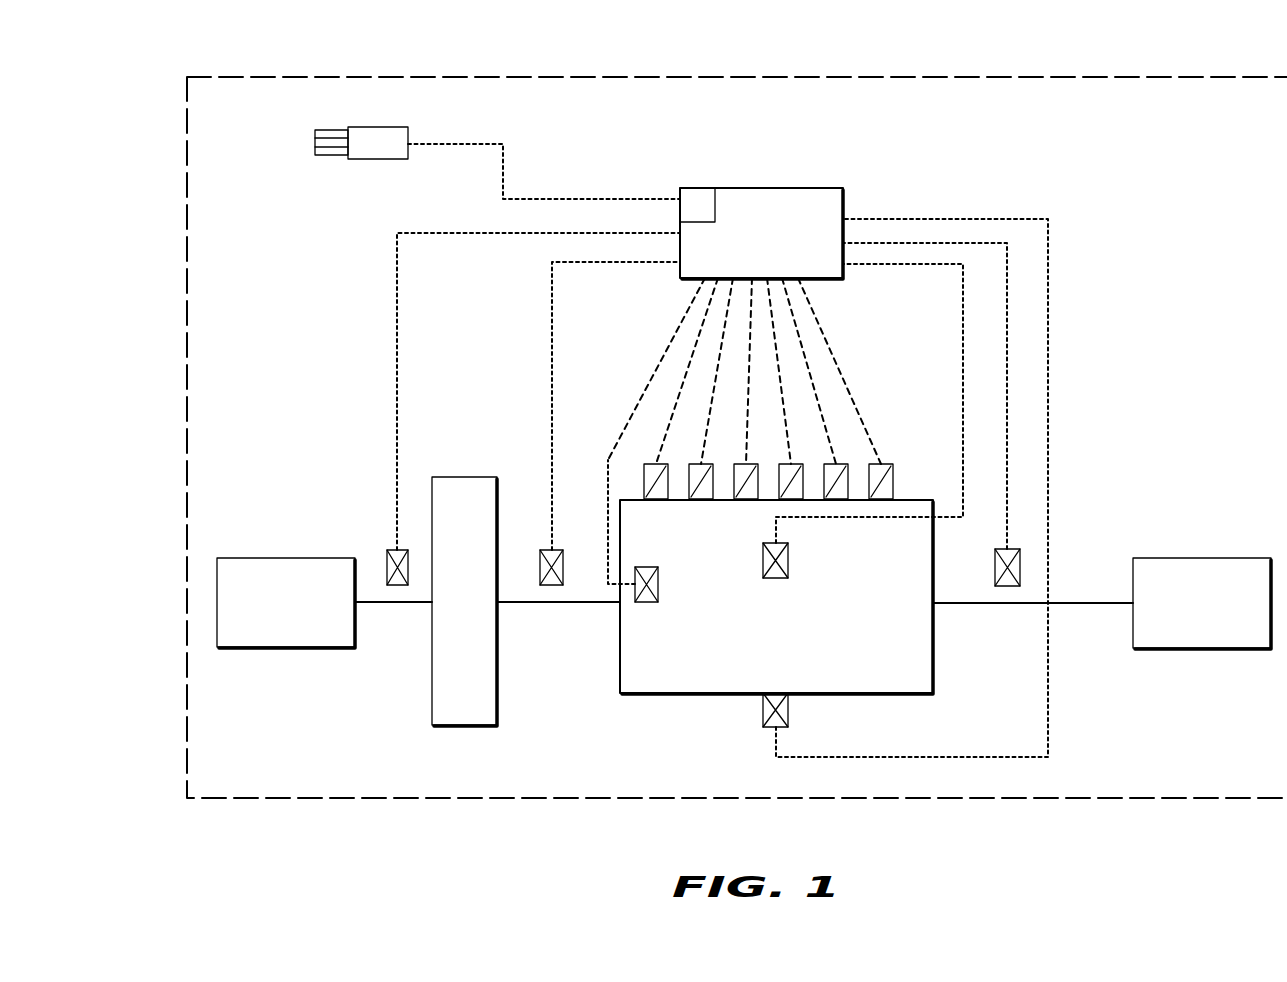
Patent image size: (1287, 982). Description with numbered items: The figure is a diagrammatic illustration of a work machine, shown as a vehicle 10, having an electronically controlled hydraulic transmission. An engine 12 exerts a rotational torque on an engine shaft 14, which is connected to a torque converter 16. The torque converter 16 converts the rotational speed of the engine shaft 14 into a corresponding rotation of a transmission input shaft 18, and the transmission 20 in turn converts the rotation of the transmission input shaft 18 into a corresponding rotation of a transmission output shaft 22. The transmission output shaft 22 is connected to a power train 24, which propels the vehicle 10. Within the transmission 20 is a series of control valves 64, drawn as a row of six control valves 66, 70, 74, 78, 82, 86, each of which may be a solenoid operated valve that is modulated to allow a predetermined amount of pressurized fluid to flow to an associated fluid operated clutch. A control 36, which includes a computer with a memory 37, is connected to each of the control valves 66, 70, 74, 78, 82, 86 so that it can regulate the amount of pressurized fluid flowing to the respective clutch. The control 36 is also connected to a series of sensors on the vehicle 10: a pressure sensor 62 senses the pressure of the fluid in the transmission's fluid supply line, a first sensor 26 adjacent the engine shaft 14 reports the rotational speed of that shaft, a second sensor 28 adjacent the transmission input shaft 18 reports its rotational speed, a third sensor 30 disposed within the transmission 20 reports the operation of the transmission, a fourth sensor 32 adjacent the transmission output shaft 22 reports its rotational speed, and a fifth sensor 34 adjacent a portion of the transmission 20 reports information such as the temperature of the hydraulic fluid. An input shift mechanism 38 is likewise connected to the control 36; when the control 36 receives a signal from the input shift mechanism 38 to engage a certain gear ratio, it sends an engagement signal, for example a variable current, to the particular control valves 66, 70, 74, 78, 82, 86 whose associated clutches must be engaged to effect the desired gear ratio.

The vehicle 10 is at (548, 77).
The engine 12 is at (252, 558).
The engine shaft 14 is at (390, 603).
The torque converter 16 is at (465, 477).
The transmission input shaft 18 is at (560, 603).
The transmission 20 is at (655, 693).
The transmission output shaft 22 is at (980, 603).
The power train 24 is at (1205, 558).
The first sensor 26 is at (392, 550).
The second sensor 28 is at (563, 562).
The third sensor 30 is at (788, 560).
The fourth sensor 32 is at (995, 562).
The fifth sensor 34 is at (788, 708).
The control 36 is at (773, 188).
The memory 37 is at (700, 196).
The input shift mechanism 38 is at (378, 160).
The pressure sensor 62 is at (645, 602).
The control valves 64 is at (667, 428).
The control valve 66 is at (652, 488).
The control valve 70 is at (697, 488).
The control valve 74 is at (752, 488).
The control valve 78 is at (797, 488).
The control valve 82 is at (840, 488).
The control valve 86 is at (885, 488).